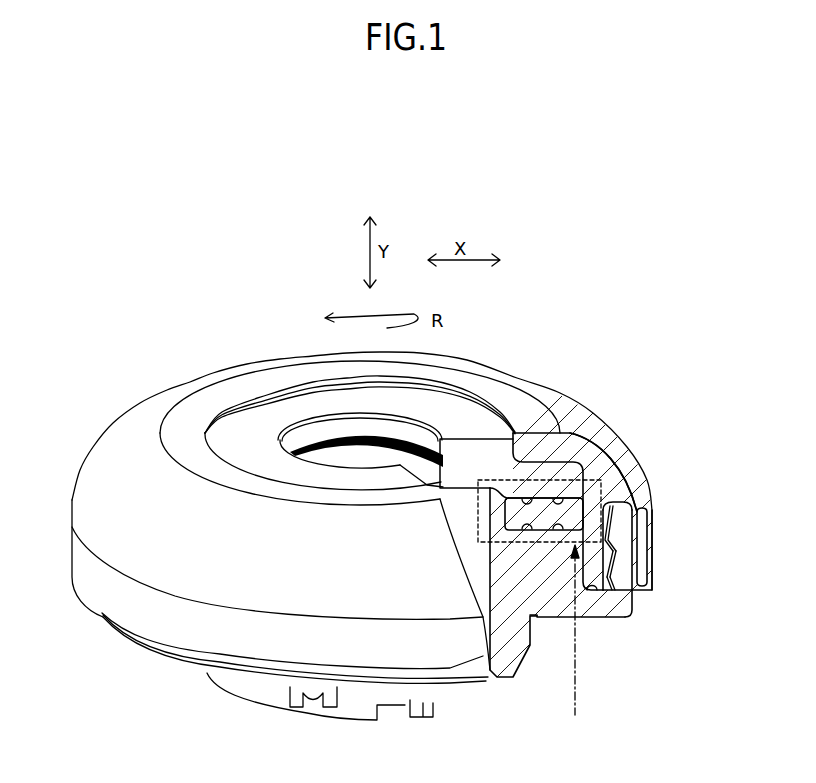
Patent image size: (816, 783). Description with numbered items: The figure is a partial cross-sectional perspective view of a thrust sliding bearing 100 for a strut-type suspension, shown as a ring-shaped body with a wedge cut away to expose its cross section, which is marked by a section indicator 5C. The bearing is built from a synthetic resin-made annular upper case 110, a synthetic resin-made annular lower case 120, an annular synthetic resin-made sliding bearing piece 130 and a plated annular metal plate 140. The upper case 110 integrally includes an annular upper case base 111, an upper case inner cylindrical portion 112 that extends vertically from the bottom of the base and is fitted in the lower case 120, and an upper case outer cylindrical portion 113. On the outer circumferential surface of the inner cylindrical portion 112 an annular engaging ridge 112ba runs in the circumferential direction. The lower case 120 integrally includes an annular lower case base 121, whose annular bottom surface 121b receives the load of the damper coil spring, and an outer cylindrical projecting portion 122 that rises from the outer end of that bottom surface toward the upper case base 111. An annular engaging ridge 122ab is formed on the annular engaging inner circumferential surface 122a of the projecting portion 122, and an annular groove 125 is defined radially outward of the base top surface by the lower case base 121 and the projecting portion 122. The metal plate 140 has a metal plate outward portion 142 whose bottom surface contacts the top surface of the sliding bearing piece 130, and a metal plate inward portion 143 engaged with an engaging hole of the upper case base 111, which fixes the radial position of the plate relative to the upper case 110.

The thrust sliding bearing 100 is at (108, 306).
The upper case 110 is at (190, 362).
The upper case base 111 is at (573, 446).
The upper case inner cylindrical portion 112 is at (601, 565).
The annular engaging ridge 112ba is at (628, 558).
The upper case outer cylindrical portion 113 is at (614, 553).
The lower case 120 is at (240, 694).
The lower case base 121 is at (492, 672).
The annular bottom surface 121b is at (602, 618).
The outer cylindrical projecting portion 122 is at (631, 533).
The annular engaging inner circumferential surface 122a is at (617, 590).
The annular engaging ridge 122ab is at (615, 510).
The annular groove 125 is at (592, 598).
The sliding bearing piece 130 is at (548, 510).
The annular metal plate 140 is at (262, 422).
The metal plate outward portion 142 is at (541, 490).
The metal plate inward portion 143 is at (456, 446).
The section view indicator FIG. 5C is at (539, 609).